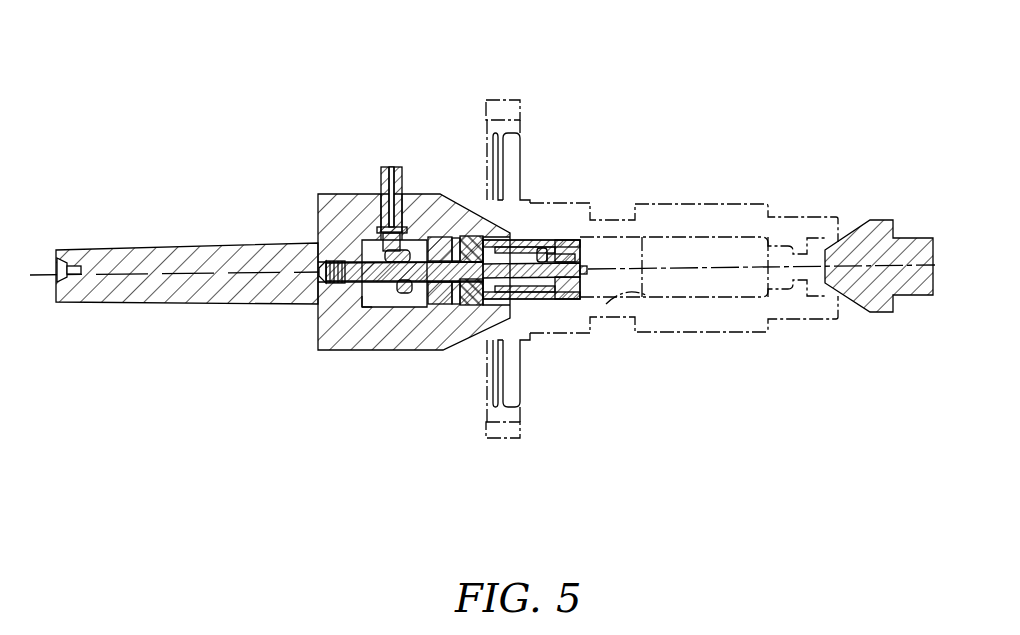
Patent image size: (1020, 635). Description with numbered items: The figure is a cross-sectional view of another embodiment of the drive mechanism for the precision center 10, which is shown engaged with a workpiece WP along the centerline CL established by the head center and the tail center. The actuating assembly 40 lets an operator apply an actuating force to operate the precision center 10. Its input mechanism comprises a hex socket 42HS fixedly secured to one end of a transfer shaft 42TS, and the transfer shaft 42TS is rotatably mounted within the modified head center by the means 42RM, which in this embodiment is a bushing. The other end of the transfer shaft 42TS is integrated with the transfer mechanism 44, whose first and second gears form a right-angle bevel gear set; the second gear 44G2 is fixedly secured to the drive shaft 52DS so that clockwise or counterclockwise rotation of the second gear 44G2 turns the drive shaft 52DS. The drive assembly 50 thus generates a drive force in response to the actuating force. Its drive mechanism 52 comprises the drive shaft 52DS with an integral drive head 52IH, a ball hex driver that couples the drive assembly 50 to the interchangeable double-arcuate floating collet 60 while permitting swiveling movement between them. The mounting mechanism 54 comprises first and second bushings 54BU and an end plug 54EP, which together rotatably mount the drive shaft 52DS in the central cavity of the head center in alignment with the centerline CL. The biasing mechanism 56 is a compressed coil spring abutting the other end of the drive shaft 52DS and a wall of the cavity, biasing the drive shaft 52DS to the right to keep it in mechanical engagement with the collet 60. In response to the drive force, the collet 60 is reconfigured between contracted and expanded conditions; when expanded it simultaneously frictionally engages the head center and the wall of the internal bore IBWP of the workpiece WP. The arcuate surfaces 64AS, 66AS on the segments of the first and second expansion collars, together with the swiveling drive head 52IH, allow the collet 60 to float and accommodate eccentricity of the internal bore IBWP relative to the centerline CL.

The precision center 10 is at (482, 289).
The actuating assembly 40 is at (350, 90).
The transfer mechanism 44 is at (352, 246).
The second gear 44G2 is at (363, 300).
The hex socket 42HS is at (384, 165).
The transfer shaft 42TS is at (374, 226).
The means for rotatably mounting the transfer shaft 42RM is at (408, 216).
The drive assembly 50 is at (377, 396).
The drive mechanism 52 is at (446, 387).
The drive shaft 52DS is at (457, 306).
The integral drive head 52IH is at (472, 306).
The mounting mechanism 54 is at (383, 369).
The bushings 54BU is at (360, 292).
The end plug 54EP is at (441, 283).
The biasing mechanism 56 is at (322, 288).
The interchangeable double-arcuate floating collet 60 is at (532, 230).
The arcuate surface of the first expansion collar 64AS is at (487, 309).
The arcuate surface of the second expansion collar 66AS is at (569, 312).
The centerline CL is at (712, 268).
The workpiece WP is at (812, 203).
The internal bore of the workpiece IBWP is at (648, 296).